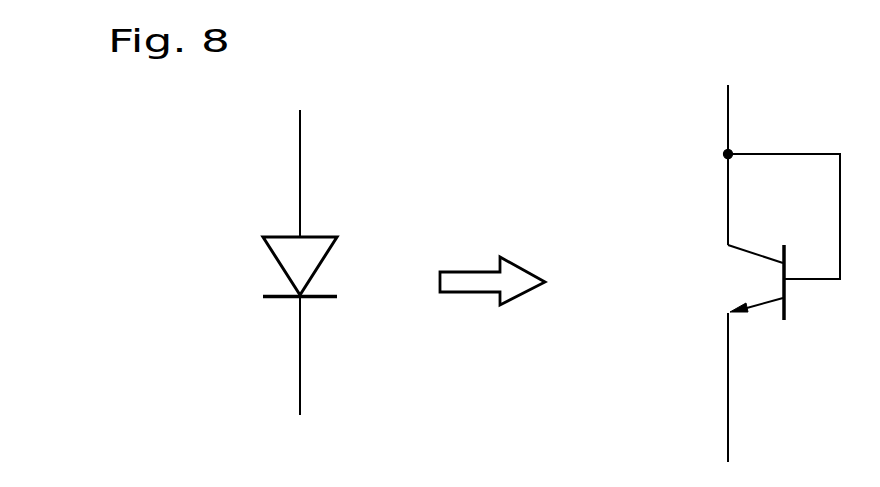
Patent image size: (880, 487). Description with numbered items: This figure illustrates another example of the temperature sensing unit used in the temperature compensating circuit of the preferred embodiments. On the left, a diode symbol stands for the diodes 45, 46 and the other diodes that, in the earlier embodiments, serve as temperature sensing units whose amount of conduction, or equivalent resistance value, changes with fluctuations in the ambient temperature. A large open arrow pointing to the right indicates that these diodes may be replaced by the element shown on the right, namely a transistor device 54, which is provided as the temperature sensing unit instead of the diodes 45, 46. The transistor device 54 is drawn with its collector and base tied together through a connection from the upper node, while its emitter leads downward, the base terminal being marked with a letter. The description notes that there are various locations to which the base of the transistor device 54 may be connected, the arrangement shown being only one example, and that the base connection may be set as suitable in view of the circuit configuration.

The diode 45 is at (284, 257).
The diode 46 is at (300, 266).
The transistor device 54 is at (758, 308).